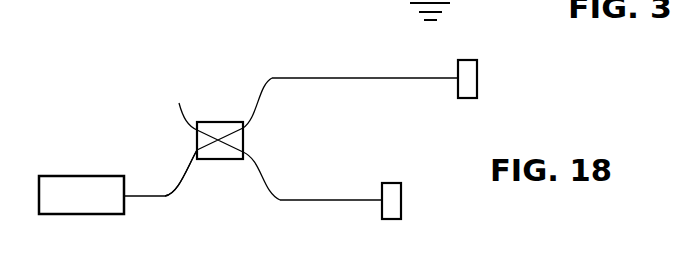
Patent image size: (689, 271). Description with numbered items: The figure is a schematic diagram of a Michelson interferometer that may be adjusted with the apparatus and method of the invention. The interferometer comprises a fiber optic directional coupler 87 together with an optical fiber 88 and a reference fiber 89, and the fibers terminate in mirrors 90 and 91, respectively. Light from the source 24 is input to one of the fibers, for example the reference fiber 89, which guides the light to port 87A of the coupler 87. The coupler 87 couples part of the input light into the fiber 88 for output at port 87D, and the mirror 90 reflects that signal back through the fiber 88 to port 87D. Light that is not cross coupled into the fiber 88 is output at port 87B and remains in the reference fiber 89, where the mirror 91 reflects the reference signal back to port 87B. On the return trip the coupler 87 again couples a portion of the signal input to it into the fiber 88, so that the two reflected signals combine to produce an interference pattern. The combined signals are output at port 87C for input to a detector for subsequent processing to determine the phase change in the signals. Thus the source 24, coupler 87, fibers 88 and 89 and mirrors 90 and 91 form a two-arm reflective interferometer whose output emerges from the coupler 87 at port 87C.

The source 24 is at (48, 214).
The fiber optic directional coupler 87 is at (216, 68).
The port 87A is at (147, 158).
The port 87B is at (287, 151).
The port 87C is at (175, 130).
The port 87D is at (279, 131).
The optical fiber 88 is at (368, 78).
The reference fiber 89 is at (150, 198).
The mirror 90 is at (477, 88).
The mirror 91 is at (401, 200).